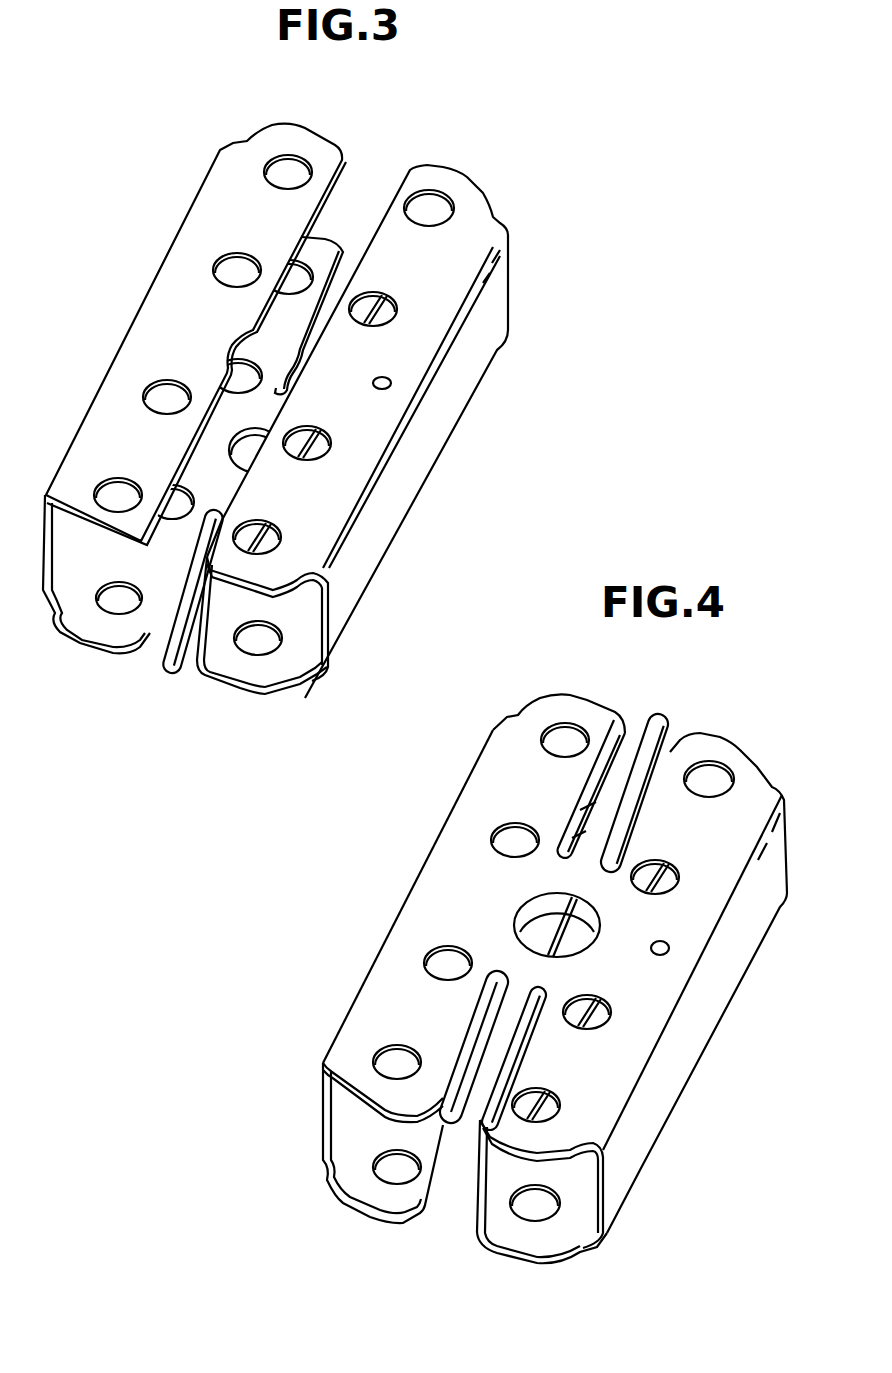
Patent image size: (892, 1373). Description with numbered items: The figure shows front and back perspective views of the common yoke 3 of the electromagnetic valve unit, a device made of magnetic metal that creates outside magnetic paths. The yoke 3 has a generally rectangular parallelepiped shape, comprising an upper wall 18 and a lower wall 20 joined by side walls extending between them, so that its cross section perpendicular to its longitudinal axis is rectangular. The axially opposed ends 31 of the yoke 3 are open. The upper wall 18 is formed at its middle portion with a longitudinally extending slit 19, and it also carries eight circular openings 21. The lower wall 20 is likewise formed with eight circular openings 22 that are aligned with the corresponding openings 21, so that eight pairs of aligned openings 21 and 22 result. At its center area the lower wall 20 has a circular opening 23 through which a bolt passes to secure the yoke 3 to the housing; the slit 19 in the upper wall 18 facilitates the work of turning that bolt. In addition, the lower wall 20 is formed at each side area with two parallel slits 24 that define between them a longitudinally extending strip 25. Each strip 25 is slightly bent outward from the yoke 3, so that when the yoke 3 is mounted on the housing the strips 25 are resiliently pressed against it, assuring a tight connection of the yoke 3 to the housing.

In FIG. 3, the common yoke 3 is at (250, 122).
In FIG. 4, the common yoke 3 is at (527, 695).
In FIG. 3, the upper wall 18 is at (173, 290).
In FIG. 4, the upper wall 18 is at (340, 1173).
In FIG. 3, the slit 19 is at (240, 493).
In FIG. 4, the slit 19 is at (477, 1140).
In FIG. 3, the lower wall 20 is at (73, 613).
In FIG. 4, the lower wall 20 is at (437, 882).
In FIG. 3, the circular openings 21 is at (218, 259).
In FIG. 4, the circular openings 21 is at (387, 1177).
In FIG. 3, the circular openings 22 is at (110, 608).
In FIG. 4, the circular openings 22 is at (510, 828).
In FIG. 3, the circular opening 23 is at (253, 432).
In FIG. 4, the circular opening 23 is at (593, 937).
In FIG. 3, the parallel slits 24 is at (157, 655).
In FIG. 4, the parallel slits 24 is at (633, 733).
In FIG. 3, the strip 25 is at (173, 668).
In FIG. 4, the strip 25 is at (653, 733).
In FIG. 3, the opened ends 31 is at (496, 220).
In FIG. 4, the opened ends 31 is at (782, 792).